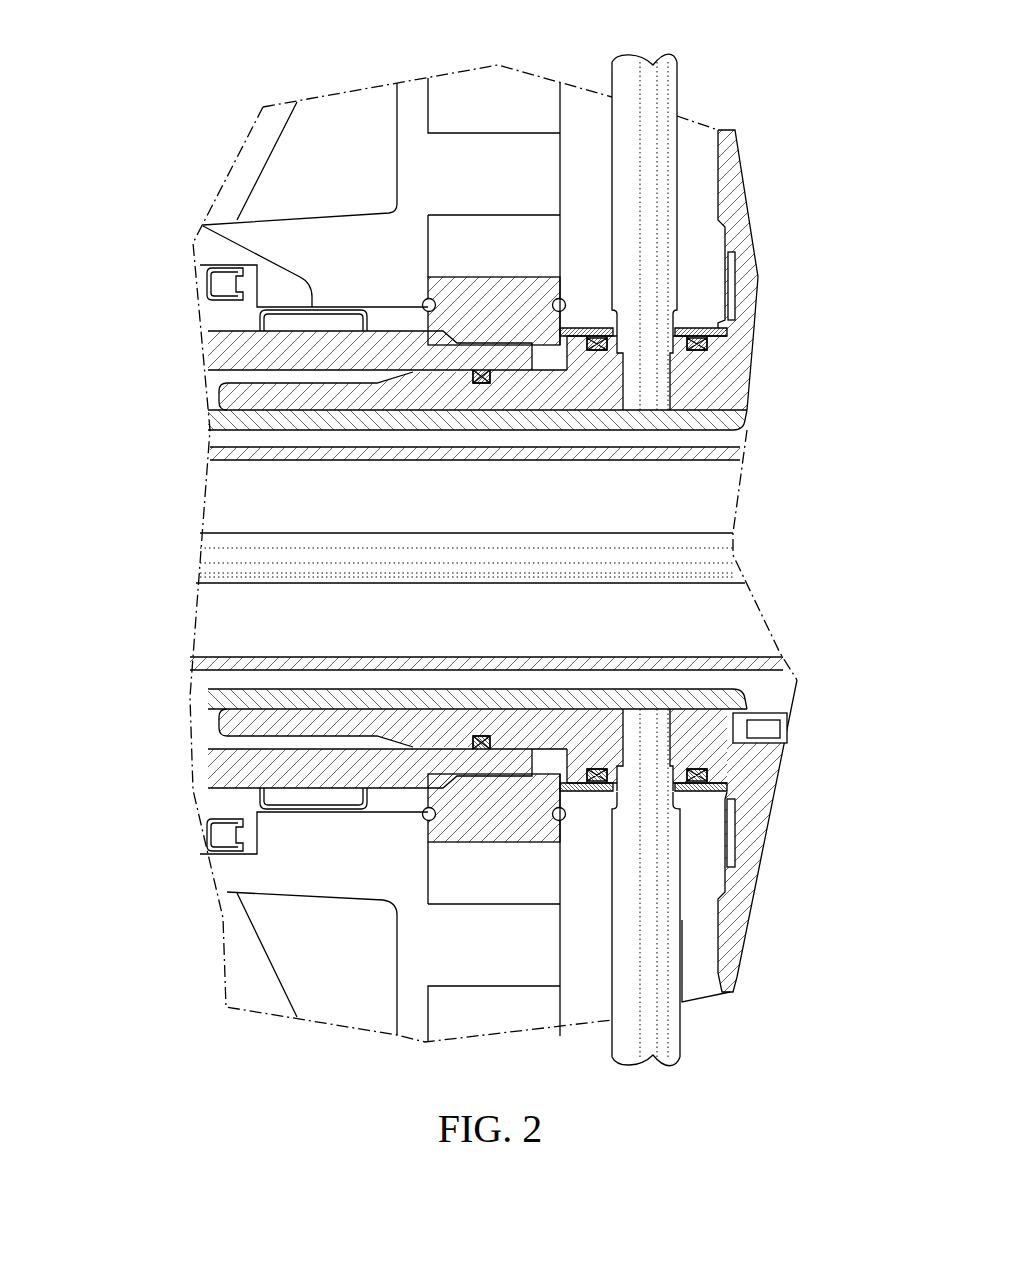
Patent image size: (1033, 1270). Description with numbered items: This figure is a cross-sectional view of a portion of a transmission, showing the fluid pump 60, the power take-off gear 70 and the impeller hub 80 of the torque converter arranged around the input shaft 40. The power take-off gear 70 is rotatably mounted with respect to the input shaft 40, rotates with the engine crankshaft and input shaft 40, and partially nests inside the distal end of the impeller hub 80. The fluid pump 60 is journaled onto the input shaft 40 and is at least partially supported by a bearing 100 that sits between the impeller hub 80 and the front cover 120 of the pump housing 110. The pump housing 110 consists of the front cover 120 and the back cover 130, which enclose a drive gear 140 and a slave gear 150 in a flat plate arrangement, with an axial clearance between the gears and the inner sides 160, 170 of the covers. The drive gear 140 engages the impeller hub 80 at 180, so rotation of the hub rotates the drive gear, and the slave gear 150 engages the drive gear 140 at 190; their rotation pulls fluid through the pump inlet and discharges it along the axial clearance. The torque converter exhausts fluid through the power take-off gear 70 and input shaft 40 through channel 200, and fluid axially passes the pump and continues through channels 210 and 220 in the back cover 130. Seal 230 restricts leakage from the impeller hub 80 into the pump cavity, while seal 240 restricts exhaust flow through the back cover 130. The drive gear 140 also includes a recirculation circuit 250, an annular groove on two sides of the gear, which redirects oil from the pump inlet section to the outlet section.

The input shaft 40 is at (486, 558).
The fluid pump 60 is at (546, 43).
The power take-off gear 70 is at (243, 393).
The impeller hub 80 is at (243, 353).
The bearing 100 is at (203, 227).
The pump housing 110 is at (224, 50).
The front cover 120 is at (273, 152).
The back cover 130 is at (587, 98).
The drive gear 140 is at (447, 225).
The slave gear 150 is at (496, 85).
The inner side of the front cover 160 is at (397, 117).
The inner side of the back cover 170 is at (560, 156).
The engagement of drive gear with impeller hub 180 is at (493, 342).
The engagement of slave gear with drive gear 190 is at (492, 855).
The channel 200 is at (323, 418).
The channel 210 is at (650, 215).
The channel 220 is at (650, 900).
The seal 230 is at (483, 383).
The seal 240 is at (607, 340).
The recirculation circuit 250 is at (435, 305).